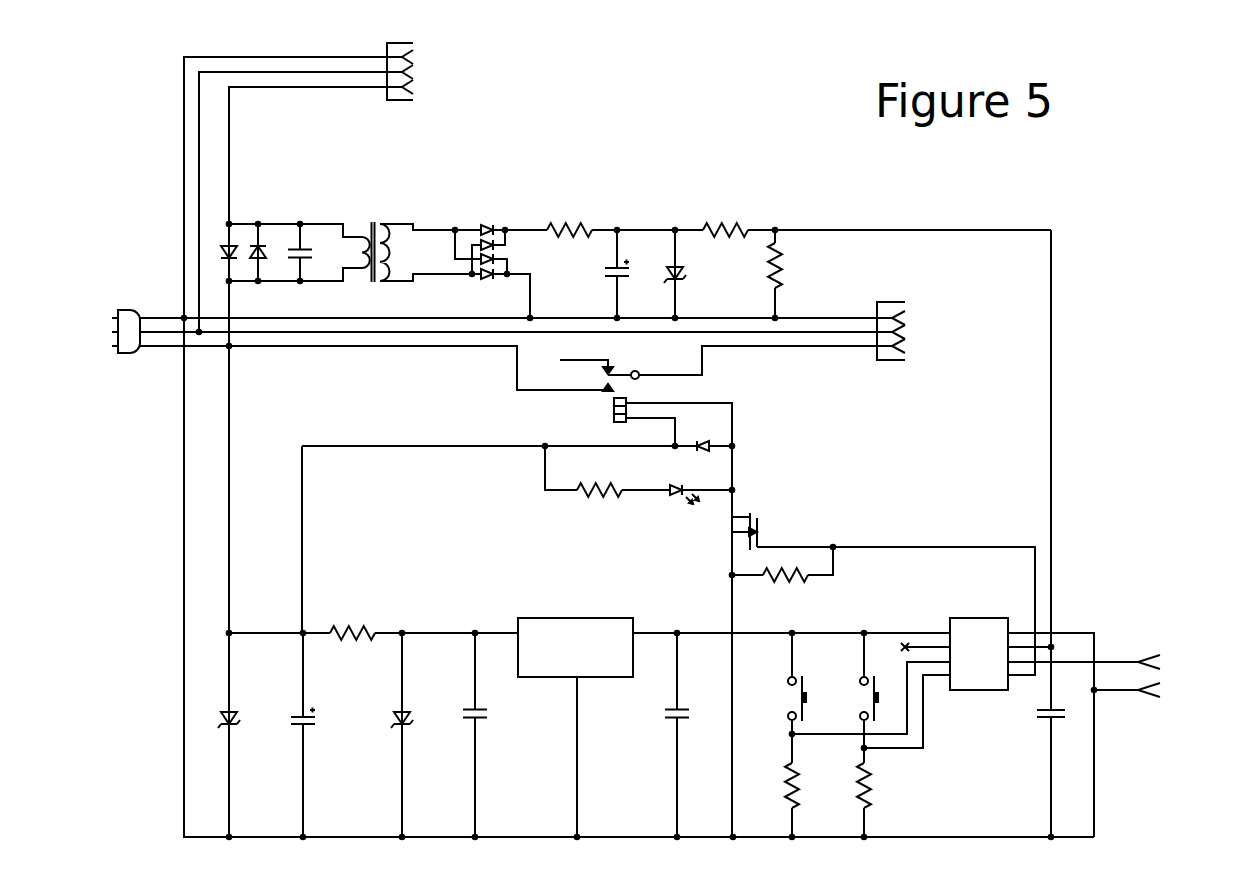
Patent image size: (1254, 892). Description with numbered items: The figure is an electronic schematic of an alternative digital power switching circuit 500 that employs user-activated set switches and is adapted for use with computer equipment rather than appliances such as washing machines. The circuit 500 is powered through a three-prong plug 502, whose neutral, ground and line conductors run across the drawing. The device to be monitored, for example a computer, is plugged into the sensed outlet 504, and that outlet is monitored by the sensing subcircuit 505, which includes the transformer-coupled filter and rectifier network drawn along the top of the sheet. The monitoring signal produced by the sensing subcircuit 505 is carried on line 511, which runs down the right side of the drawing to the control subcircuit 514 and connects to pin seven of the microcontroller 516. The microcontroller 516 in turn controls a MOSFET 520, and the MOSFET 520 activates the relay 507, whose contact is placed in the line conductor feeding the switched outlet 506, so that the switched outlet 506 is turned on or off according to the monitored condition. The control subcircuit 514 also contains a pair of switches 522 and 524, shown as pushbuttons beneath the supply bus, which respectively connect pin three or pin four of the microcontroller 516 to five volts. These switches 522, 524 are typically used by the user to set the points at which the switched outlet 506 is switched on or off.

The digital power switching circuit 500 is at (713, 182).
The three-prong plug 502 is at (128, 355).
The sensed outlet 504 is at (395, 99).
The sensing subcircuit 505 is at (383, 204).
The switched outlet 506 is at (889, 360).
The relay 507 is at (604, 389).
The line 511 is at (1052, 455).
The control subcircuit 514 is at (706, 590).
The microcontroller 516 is at (972, 627).
The MOSFET 520 is at (758, 541).
The switch 522 is at (783, 697).
The switch 524 is at (858, 697).